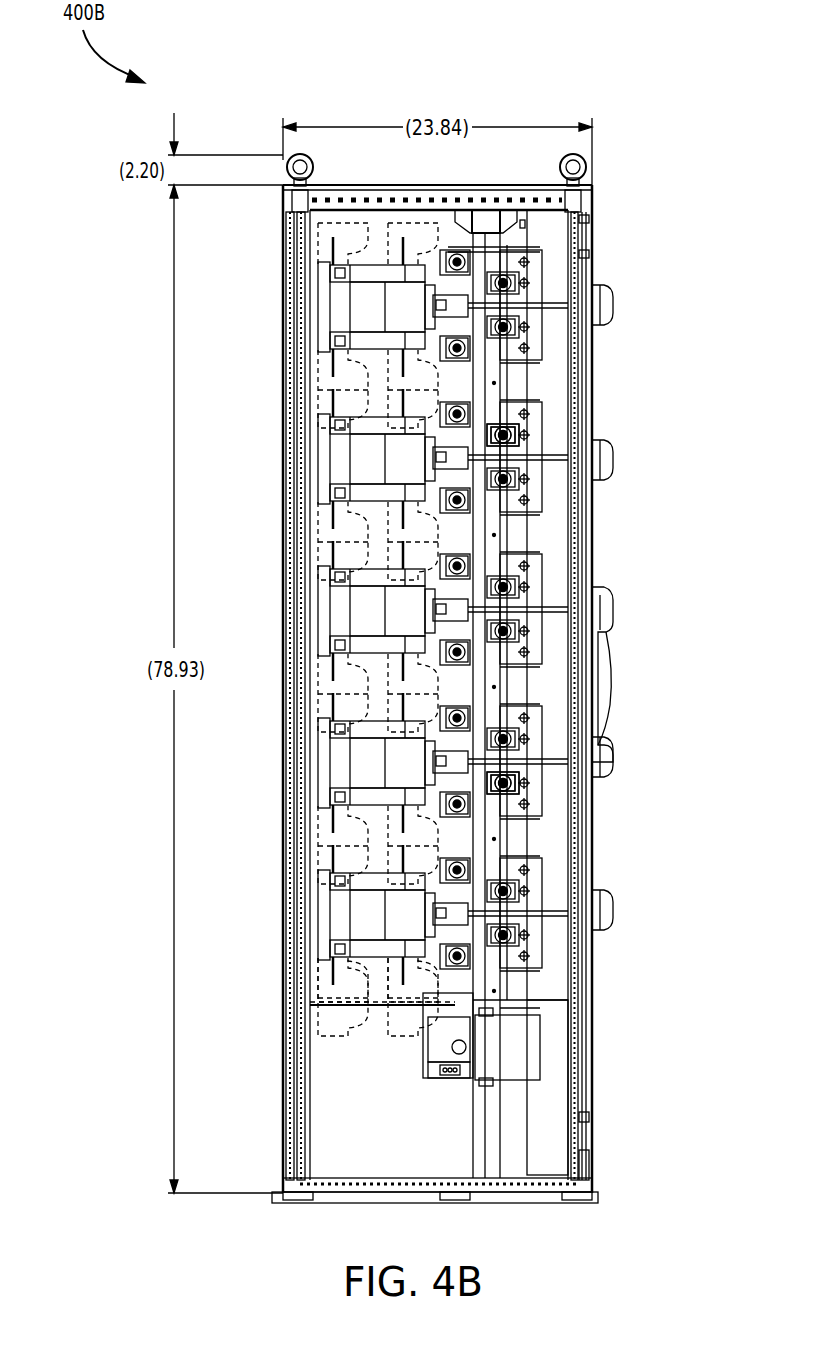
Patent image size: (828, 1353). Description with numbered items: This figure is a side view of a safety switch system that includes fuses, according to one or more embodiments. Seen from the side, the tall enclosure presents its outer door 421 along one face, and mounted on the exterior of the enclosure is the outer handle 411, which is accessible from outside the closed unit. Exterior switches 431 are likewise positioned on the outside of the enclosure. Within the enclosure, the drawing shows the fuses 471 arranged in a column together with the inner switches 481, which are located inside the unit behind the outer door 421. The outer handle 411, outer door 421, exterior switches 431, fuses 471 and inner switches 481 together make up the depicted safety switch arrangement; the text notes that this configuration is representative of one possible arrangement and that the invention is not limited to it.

The outer handle 411 is at (612, 700).
The outer door 421 is at (572, 536).
The exterior switches 431 is at (615, 303).
The fuses 471 is at (527, 788).
The inner switches 481 is at (503, 435).